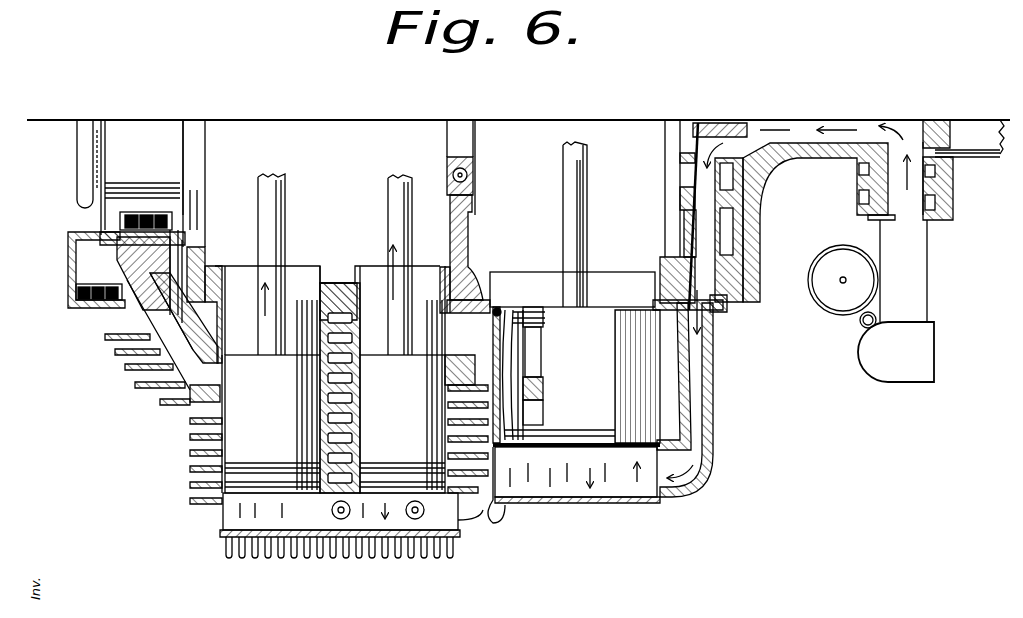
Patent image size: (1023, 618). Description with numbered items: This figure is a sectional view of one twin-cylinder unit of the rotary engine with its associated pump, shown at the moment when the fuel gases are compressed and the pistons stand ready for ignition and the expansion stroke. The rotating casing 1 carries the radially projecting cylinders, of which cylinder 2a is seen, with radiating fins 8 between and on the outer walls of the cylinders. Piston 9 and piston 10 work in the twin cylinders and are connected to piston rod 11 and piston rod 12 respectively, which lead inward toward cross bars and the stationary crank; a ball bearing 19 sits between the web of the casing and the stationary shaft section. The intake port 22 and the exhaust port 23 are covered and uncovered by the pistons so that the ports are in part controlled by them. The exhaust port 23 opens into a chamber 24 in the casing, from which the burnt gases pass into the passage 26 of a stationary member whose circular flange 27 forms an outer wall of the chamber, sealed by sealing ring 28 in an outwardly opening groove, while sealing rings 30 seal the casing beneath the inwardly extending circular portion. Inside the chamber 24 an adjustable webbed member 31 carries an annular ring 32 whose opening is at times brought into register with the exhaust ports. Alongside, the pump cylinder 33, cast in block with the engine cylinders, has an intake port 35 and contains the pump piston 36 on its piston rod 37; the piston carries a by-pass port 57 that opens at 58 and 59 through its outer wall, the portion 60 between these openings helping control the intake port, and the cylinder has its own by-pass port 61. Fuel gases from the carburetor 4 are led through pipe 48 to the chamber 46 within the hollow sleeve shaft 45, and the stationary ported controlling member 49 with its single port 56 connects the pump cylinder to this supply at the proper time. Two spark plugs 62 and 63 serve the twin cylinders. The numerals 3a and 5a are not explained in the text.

The rotating casing 1 is at (673, 285).
The cylinder 2a is at (296, 275).
The crankshaft bearing 3a is at (370, 413).
The carburetor 4 is at (897, 374).
The partition wall 5a is at (722, 305).
The radiating fins 8 is at (236, 553).
The piston 9 is at (402, 396).
The piston 10 is at (268, 437).
The piston rod 11 is at (398, 186).
The piston rod 12 is at (285, 210).
The ball bearing 19 is at (474, 182).
The intake port 22 is at (463, 375).
The exhaust port 23 is at (220, 380).
The chamber 24 is at (140, 384).
The passage 26 is at (443, 296).
The circular flange 27 is at (107, 318).
The sealing ring 28 is at (100, 308).
The sealing rings 30 is at (160, 212).
The adjustable webbed member 31 is at (118, 262).
The annular ring 32 is at (182, 402).
The pump cylinder 33 is at (607, 428).
The intake port 35 is at (650, 487).
The pump piston 36 is at (625, 385).
The piston rod 37 is at (583, 243).
The sleeve shaft 45 is at (822, 158).
The chamber 46 is at (857, 132).
The pipe 48 is at (913, 262).
The stationary ported controlling member 49 is at (715, 232).
The port 56 is at (698, 245).
The by-pass port 57 is at (512, 375).
The opening 58 is at (520, 418).
The opening 59 is at (507, 343).
The portion 60 is at (525, 390).
The by-pass port 61 is at (500, 523).
The spark plug 62 is at (338, 520).
The spark plug 63 is at (414, 520).